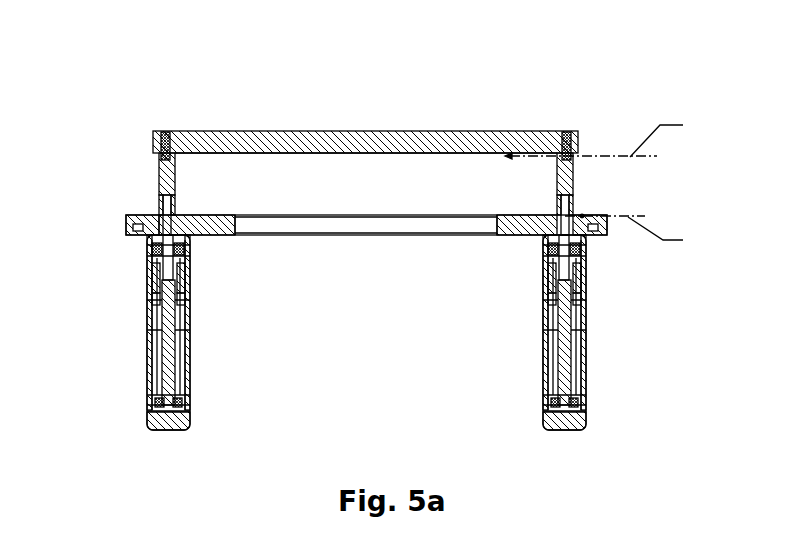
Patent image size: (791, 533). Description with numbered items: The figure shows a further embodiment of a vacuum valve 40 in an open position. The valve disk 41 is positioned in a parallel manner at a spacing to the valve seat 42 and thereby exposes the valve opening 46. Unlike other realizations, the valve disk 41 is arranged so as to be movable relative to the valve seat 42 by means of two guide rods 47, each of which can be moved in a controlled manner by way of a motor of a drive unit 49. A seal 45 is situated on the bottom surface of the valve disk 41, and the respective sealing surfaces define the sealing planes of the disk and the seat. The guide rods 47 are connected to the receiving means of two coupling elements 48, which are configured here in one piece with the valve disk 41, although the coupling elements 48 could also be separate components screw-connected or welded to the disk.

The vacuum valve 40 is at (200, 45).
The valve disk 41 is at (357, 140).
The valve seat 42 is at (225, 230).
The seal 45 is at (228, 153).
The valve opening 46 is at (477, 227).
The guide rod 47 is at (162, 168).
The coupling element 48 is at (163, 122).
The drive unit 49 is at (203, 363).